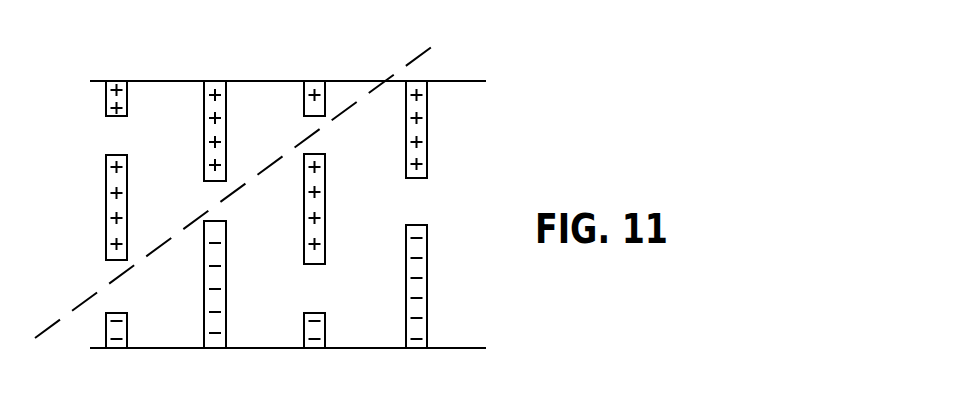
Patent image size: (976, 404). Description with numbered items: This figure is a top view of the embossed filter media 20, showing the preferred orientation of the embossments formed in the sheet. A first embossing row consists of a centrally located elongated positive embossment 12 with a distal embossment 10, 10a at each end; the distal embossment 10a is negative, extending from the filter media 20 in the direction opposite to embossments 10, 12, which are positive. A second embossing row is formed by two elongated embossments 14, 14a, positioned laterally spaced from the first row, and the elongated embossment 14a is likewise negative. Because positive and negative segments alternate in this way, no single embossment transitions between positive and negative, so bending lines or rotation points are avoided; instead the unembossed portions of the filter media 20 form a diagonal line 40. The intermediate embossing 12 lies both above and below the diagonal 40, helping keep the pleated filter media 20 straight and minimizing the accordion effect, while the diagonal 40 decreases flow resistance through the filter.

The distal embossment 10 is at (318, 81).
The negative distal embossment 10a is at (315, 347).
The elongated positive embossment 12 is at (326, 205).
The elongated embossment 14 is at (427, 130).
The negative elongated embossment 14a is at (417, 343).
The filter media 20 is at (255, 335).
The diagonal line 40 is at (254, 185).